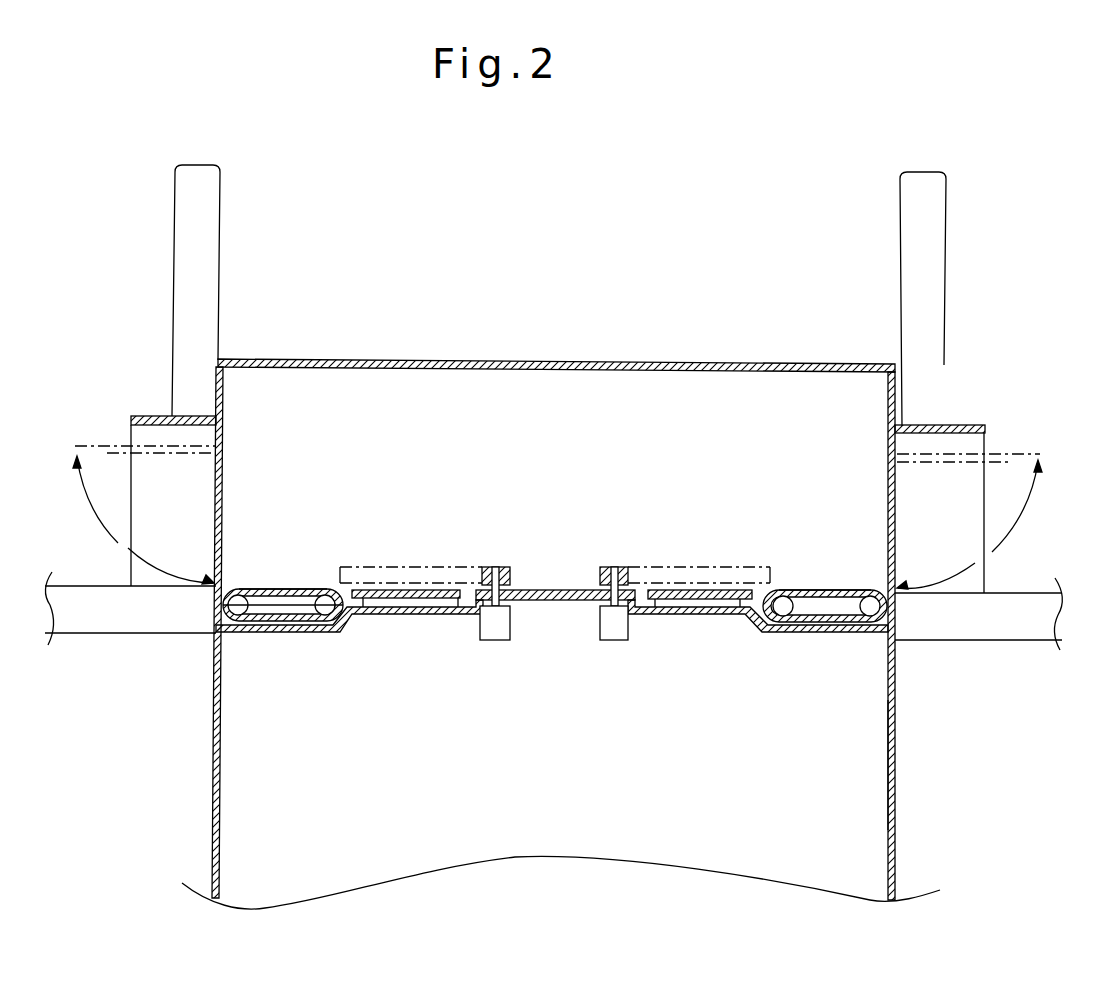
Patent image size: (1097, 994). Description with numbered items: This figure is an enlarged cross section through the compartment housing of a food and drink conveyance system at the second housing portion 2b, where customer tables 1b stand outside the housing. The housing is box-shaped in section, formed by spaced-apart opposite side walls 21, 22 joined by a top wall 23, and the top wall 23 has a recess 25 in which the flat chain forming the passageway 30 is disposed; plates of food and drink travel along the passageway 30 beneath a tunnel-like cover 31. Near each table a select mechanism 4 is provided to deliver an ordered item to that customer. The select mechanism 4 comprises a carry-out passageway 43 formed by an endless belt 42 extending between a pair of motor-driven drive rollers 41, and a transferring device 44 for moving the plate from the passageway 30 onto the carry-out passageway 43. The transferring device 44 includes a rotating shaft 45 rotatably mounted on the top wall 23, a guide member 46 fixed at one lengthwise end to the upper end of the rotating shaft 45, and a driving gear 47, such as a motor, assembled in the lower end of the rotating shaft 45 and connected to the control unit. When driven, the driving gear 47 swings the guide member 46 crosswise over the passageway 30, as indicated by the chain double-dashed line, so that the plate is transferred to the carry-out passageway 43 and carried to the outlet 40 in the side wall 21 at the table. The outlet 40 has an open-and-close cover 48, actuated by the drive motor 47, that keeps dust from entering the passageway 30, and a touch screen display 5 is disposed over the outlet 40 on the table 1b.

The table 1b is at (130, 625).
The second housing portion 2b is at (900, 763).
The select mechanism 4 is at (324, 507).
The touch screen display 5 is at (186, 212).
The side wall 21 is at (213, 738).
The side wall 22 is at (897, 822).
The top wall 23 is at (548, 588).
The recess 25 is at (428, 612).
The passageway 30 is at (386, 600).
The tunnel-like cover 31 is at (525, 360).
The outlet 40 is at (166, 531).
The drive roller 41 is at (240, 607).
The endless belt 42 is at (301, 588).
The carry-out passageway 43 is at (284, 578).
The transferring device 44 is at (406, 555).
The rotating shaft 45 is at (496, 567).
The guide member 46 is at (487, 567).
The driving gear 47 is at (498, 640).
The open-and-close cover 48 is at (217, 510).